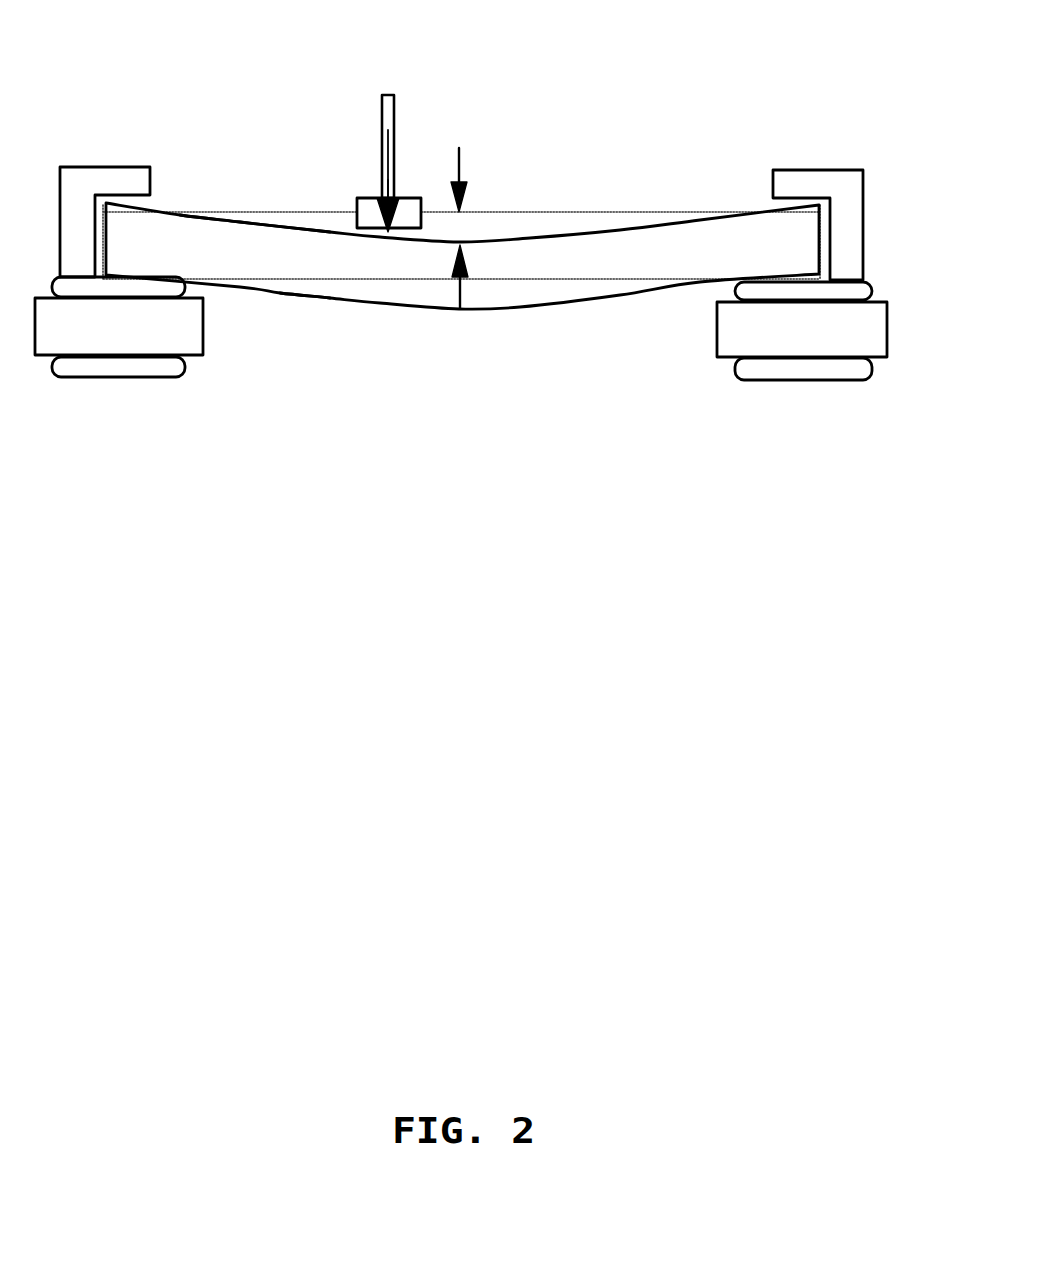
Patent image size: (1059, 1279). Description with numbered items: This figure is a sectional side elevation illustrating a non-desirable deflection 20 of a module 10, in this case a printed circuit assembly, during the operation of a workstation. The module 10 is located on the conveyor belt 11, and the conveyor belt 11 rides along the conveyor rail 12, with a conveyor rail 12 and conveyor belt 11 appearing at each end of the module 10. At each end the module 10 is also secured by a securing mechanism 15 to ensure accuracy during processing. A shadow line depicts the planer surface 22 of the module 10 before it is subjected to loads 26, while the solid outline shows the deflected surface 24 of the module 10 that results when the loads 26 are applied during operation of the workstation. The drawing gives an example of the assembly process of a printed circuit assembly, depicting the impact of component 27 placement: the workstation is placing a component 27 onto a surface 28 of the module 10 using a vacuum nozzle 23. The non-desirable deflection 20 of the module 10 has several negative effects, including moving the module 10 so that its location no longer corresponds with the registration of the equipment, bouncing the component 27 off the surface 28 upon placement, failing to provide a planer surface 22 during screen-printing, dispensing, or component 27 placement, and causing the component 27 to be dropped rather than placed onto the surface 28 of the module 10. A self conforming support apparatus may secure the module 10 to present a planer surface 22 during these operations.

The module 10 is at (380, 280).
The conveyor belt 11 is at (107, 369).
The conveyor rail 12 is at (197, 330).
The securing mechanism 15 is at (808, 183).
The non-desirable deflection 20 is at (462, 228).
The planer surface 22 is at (572, 220).
The vacuum nozzle 23 is at (395, 112).
The deflected surface 24 is at (307, 298).
The loads 26 is at (378, 195).
The component 27 is at (368, 218).
The surface 28 is at (278, 228).